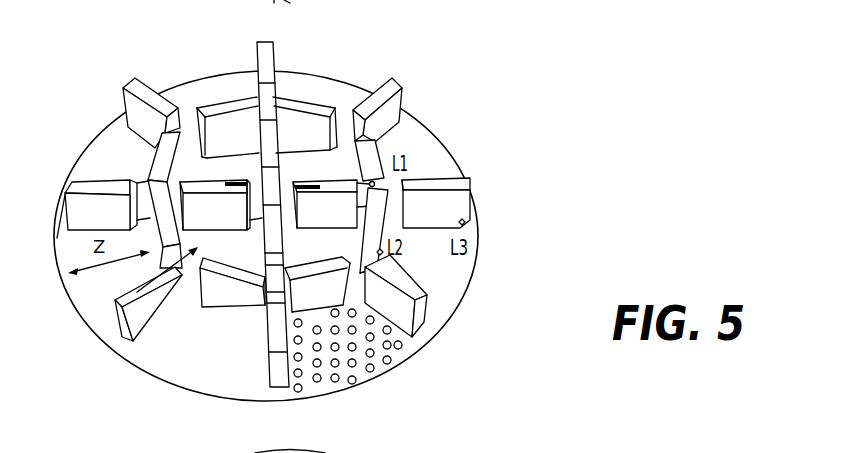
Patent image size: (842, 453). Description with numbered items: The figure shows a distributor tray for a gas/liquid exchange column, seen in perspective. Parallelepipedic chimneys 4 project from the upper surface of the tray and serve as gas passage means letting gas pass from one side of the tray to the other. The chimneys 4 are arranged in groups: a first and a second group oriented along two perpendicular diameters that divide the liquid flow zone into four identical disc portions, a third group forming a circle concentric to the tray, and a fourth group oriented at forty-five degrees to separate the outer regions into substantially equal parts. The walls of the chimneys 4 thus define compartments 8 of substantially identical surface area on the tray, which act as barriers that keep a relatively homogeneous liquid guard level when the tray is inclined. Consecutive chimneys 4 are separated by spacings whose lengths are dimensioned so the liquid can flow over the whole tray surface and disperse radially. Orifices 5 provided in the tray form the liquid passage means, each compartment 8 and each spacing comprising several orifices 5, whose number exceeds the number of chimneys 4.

The chimney 4 is at (389, 75).
The orifice 5 is at (362, 388).
The compartment 8 is at (200, 346).